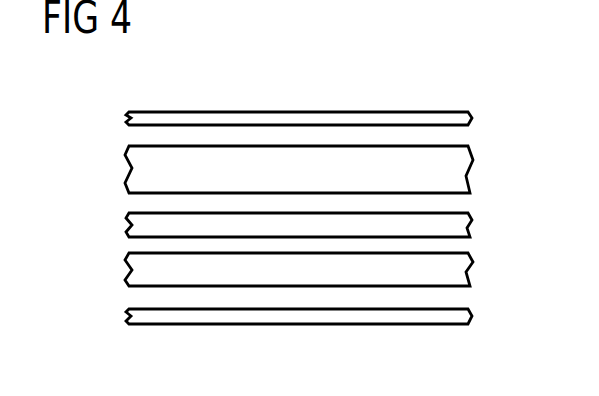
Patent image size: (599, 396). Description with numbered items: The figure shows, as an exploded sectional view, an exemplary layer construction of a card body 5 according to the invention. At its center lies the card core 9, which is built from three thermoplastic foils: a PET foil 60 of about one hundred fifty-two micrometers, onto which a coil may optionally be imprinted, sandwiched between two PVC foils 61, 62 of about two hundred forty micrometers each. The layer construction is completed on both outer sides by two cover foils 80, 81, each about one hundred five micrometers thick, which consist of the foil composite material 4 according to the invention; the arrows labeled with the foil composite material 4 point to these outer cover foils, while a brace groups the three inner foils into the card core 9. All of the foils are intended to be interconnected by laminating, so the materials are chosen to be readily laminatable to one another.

The foil composite material 4 is at (102, 117).
The card body 5 is at (451, 76).
The card core 9 is at (110, 145).
The cover foil 80 is at (458, 116).
The cover foil 81 is at (458, 315).
The PVC foil 61 is at (458, 173).
The PET foil 60 is at (458, 227).
The PVC foil 62 is at (458, 268).